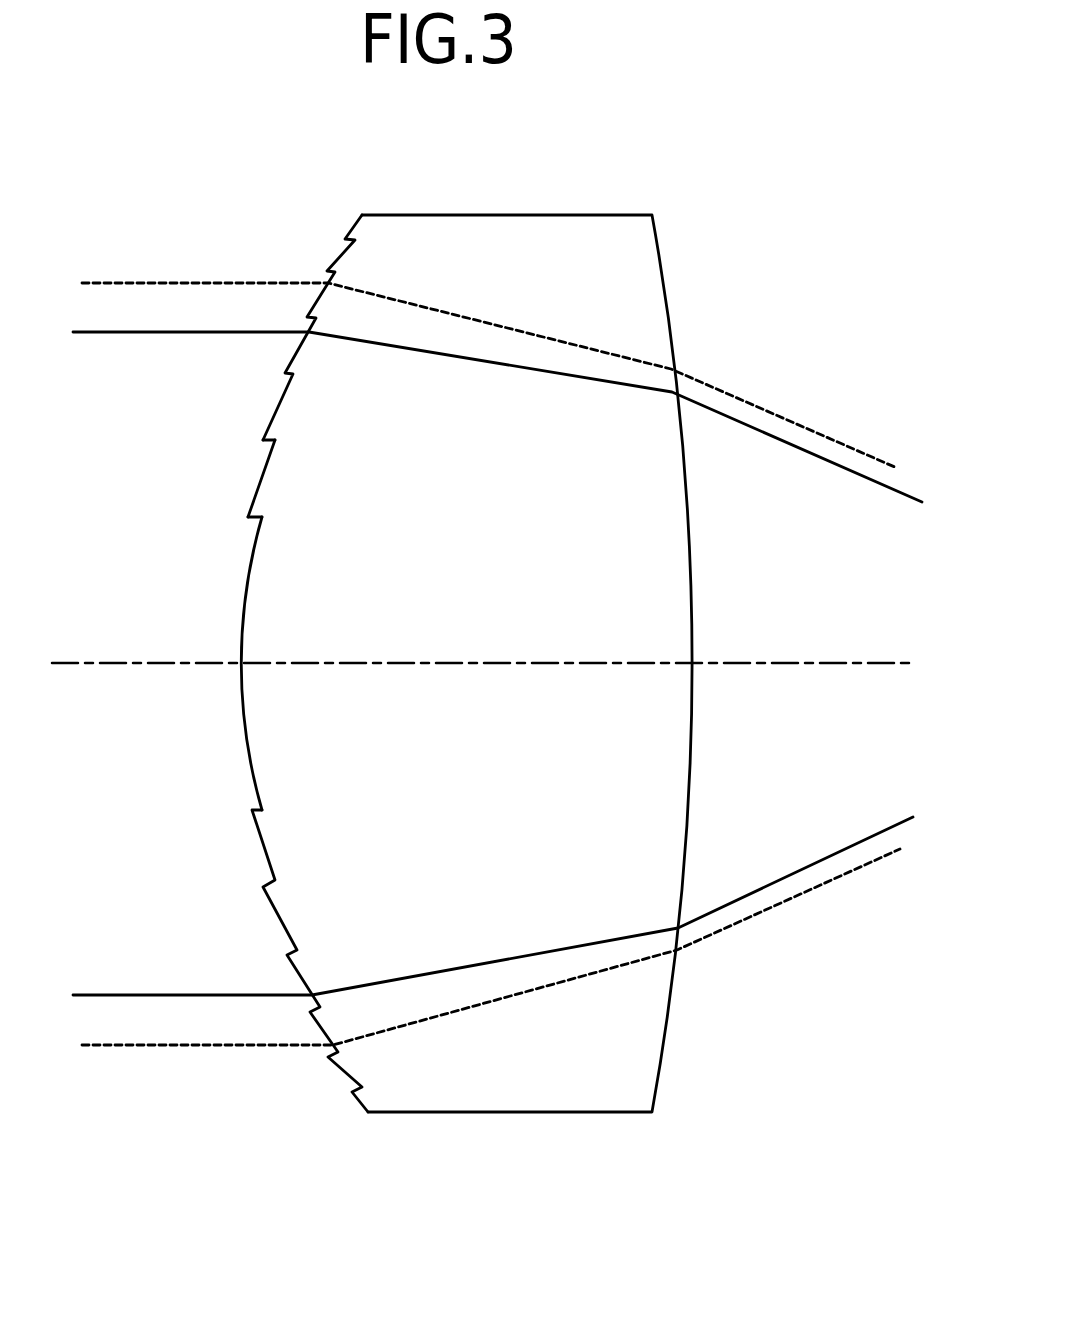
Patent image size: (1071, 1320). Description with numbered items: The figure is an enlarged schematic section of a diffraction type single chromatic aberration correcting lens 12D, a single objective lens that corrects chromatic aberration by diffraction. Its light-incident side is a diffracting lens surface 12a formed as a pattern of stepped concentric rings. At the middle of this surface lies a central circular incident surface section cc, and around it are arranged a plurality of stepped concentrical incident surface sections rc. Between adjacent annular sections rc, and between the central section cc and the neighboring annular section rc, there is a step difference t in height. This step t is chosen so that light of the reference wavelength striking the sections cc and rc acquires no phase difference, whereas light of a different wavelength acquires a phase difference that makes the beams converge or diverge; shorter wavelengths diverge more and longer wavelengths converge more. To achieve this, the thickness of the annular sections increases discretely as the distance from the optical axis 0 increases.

The diffraction type single chromatic aberration correcting lens 12D is at (603, 1065).
The diffracting lens surface 12a is at (305, 1118).
The step difference t is at (272, 445).
The stepped concentrical incident surface sections rc is at (262, 486).
The central circular incident surface section cc is at (242, 643).
The optical axis 0 is at (120, 665).